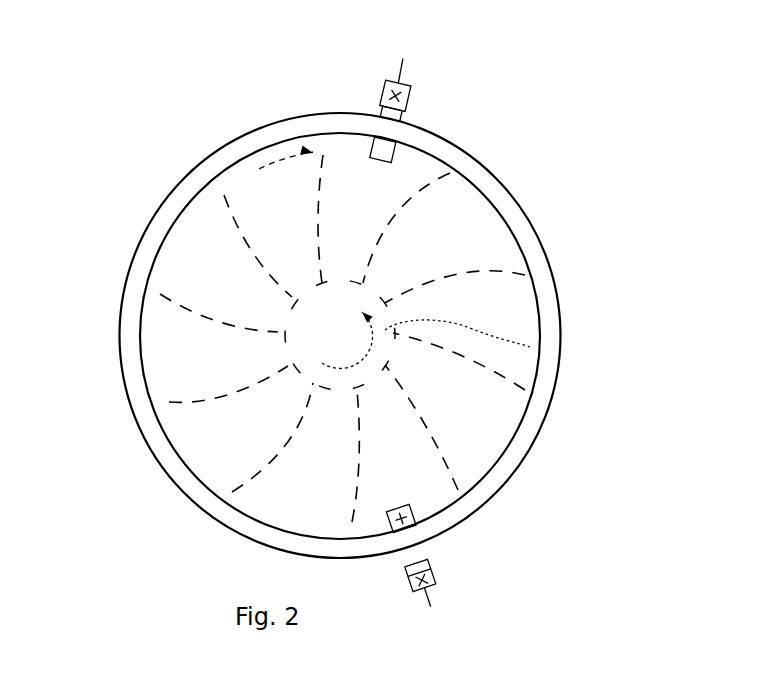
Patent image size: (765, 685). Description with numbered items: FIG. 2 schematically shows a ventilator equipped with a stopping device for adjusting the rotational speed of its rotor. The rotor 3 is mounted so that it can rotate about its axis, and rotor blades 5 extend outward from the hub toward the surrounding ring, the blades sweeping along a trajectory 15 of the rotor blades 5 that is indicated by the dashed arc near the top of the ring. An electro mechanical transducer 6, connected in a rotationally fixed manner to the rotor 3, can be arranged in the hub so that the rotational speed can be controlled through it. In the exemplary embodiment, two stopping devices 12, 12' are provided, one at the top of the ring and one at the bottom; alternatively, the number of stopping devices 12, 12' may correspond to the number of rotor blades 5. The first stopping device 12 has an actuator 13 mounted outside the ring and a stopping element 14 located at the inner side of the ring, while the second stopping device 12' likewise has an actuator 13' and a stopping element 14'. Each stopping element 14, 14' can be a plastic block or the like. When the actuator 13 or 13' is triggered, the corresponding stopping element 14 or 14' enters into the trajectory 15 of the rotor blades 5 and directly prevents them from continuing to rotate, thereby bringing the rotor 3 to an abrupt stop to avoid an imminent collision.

The rotor 3 is at (187, 449).
The rotor blades 5 is at (483, 240).
The electro mechanical transducer 6 is at (530, 347).
The stopping device 12 is at (455, 52).
The actuator 13 is at (292, 211).
The stopping element 14 is at (459, 146).
The trajectory of the rotor blades 15 is at (280, 155).
The stopping device 12' is at (473, 613).
The actuator 13' is at (459, 575).
The stopping element 14' is at (451, 519).